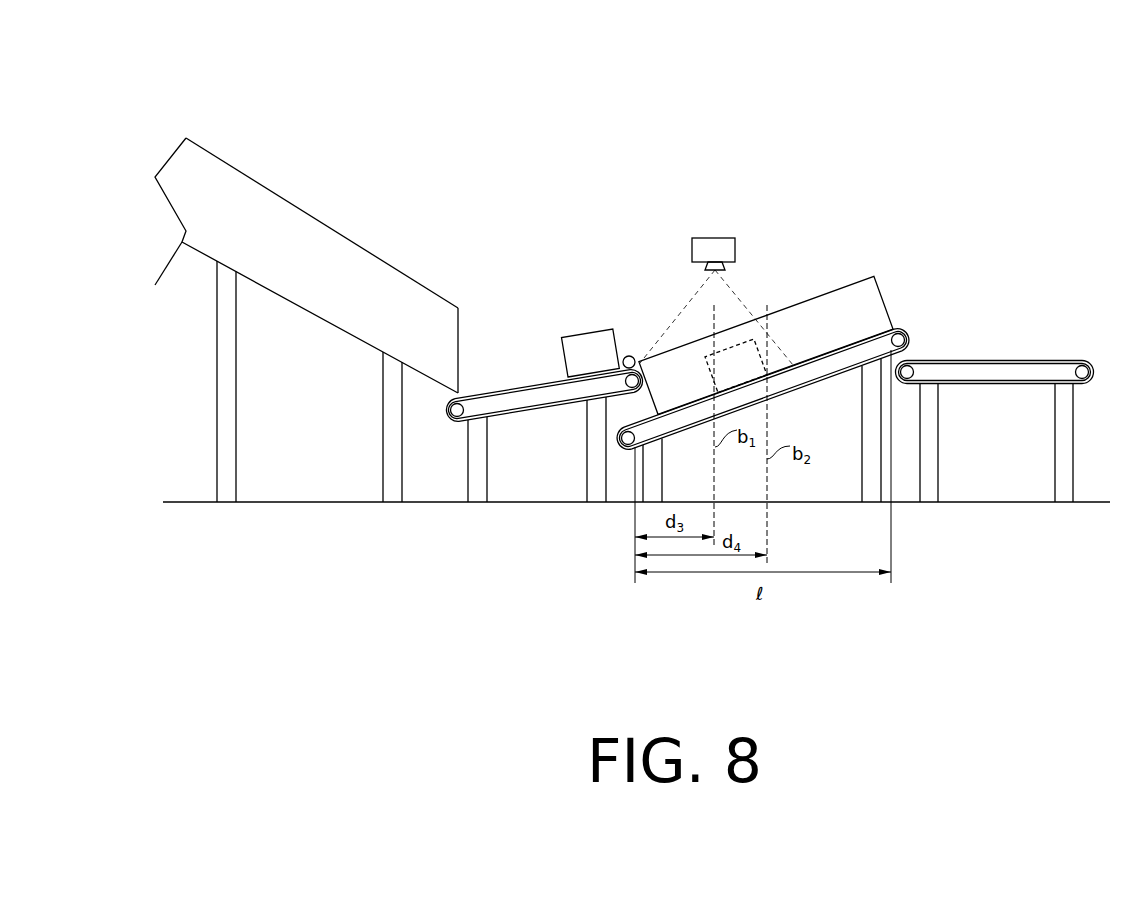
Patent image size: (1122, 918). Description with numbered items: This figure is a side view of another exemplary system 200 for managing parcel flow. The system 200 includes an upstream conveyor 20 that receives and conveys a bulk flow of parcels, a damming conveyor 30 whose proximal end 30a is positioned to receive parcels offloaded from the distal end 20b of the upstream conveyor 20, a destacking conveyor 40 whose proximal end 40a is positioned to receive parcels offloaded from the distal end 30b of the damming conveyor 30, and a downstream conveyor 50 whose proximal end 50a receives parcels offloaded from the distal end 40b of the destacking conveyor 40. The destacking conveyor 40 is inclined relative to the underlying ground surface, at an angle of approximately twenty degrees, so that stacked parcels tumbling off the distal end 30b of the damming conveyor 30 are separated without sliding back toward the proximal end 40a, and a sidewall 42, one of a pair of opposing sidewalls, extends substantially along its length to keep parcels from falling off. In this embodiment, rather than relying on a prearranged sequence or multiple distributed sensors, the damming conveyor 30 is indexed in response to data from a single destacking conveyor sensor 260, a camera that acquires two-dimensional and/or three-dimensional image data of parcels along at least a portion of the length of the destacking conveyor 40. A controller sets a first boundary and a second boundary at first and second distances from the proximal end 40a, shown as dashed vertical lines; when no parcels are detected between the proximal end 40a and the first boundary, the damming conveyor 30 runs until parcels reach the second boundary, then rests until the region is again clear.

The system for managing parcel flow 200 is at (156, 93).
The upstream conveyor 20 is at (306, 320).
The distal end of the upstream conveyor 20b is at (457, 336).
The damming conveyor 30 is at (531, 405).
The proximal end of the damming conveyor 30a is at (457, 422).
The distal end of the damming conveyor 30b is at (632, 390).
The destacking conveyor 40 is at (768, 379).
The proximal end of the destacking conveyor 40a is at (633, 447).
The distal end of the destacking conveyor 40b is at (907, 355).
The sidewall 42 is at (853, 278).
The downstream conveyor 50 is at (995, 397).
The proximal end of the downstream conveyor 50a is at (903, 382).
The destacking conveyor sensor 260 is at (717, 238).